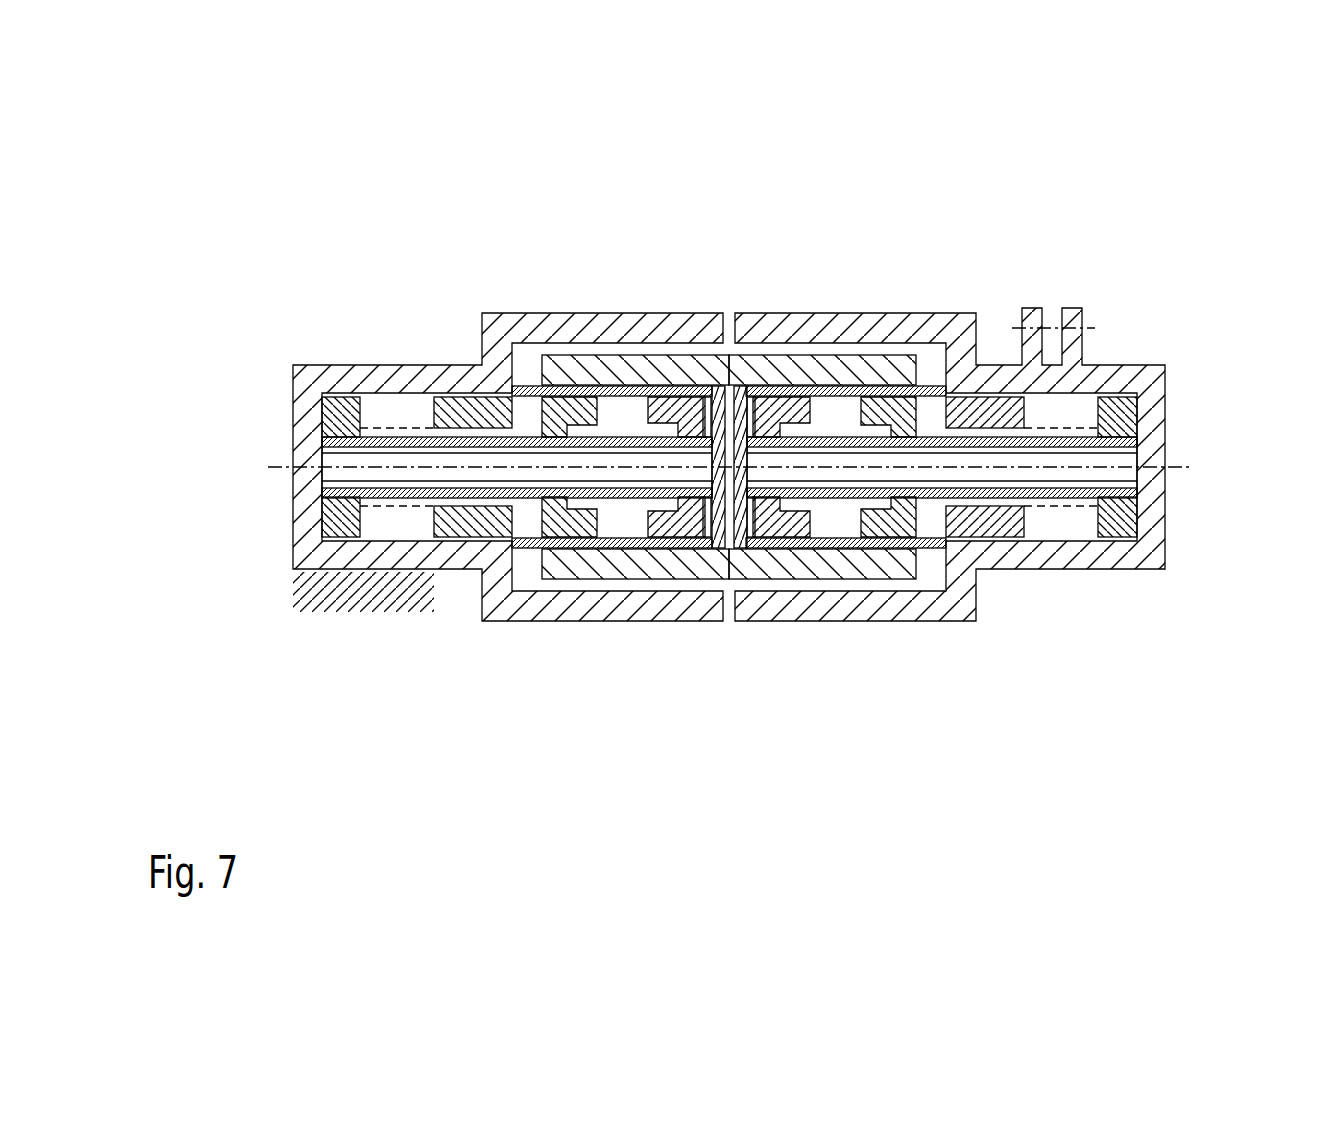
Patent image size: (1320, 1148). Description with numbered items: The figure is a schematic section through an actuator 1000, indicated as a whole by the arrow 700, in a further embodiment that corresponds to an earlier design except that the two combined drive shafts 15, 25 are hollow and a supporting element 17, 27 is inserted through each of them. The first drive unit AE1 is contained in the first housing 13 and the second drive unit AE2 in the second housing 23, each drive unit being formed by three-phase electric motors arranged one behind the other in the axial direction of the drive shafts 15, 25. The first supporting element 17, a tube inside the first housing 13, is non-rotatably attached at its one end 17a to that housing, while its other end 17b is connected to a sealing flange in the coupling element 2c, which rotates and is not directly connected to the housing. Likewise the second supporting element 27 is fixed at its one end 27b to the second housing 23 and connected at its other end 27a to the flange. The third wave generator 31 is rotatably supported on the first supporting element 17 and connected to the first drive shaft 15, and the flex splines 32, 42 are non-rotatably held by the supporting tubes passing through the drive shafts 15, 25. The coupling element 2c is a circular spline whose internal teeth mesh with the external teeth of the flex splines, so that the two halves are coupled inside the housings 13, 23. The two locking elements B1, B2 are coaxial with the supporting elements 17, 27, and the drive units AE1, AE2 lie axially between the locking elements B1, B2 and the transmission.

The actuator 1000 is at (272, 188).
The drive unit 700 is at (717, 780).
The first housing 13 is at (500, 325).
The second housing 23 is at (768, 410).
The circular spline 2c is at (731, 380).
The third wave generator 31 is at (660, 410).
The third flex spline 32 is at (690, 550).
The fourth flex spline 42 is at (768, 548).
The first drive shaft 15 is at (444, 432).
The second drive shaft 25 is at (1000, 442).
The first locking element B1 is at (340, 405).
The second locking element B2 is at (1128, 402).
The first supporting element 17 is at (345, 462).
The second supporting element 27 is at (1110, 463).
The one end of the first supporting element 17a is at (333, 502).
The other end of the first supporting element 17b is at (699, 500).
The other end of the second supporting element 27a is at (761, 500).
The one end of the second supporting element 27b is at (1118, 502).
The first drive unit AE1 is at (512, 692).
The second drive unit AE2 is at (1095, 692).